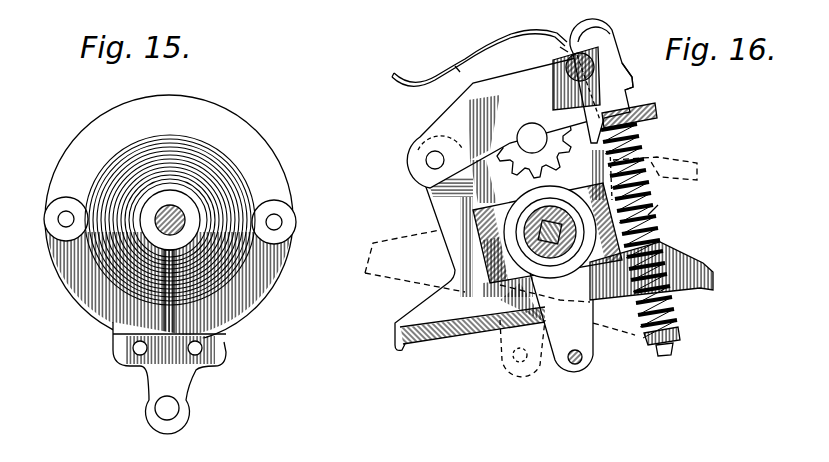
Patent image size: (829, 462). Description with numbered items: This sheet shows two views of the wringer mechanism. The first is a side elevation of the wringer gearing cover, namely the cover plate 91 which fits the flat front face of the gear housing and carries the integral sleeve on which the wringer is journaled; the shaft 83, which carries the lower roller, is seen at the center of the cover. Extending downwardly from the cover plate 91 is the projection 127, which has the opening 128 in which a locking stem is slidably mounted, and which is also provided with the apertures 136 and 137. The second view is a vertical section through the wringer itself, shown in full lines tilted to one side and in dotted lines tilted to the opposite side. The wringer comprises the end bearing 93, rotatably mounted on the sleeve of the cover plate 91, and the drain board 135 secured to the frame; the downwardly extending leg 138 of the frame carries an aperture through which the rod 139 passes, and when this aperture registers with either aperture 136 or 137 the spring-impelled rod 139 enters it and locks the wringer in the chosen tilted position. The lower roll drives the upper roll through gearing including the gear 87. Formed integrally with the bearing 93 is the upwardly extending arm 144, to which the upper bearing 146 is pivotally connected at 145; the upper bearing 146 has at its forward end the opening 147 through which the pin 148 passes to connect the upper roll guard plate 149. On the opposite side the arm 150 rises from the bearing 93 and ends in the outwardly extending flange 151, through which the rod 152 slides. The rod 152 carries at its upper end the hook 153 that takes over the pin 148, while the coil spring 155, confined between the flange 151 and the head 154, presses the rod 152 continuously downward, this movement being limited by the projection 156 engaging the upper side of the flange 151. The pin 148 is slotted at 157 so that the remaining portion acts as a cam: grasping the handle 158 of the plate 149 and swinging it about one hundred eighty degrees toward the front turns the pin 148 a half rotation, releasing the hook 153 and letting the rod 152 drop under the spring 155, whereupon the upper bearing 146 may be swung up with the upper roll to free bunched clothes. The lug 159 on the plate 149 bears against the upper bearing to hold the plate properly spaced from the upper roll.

In FIG. 15, the shaft 83 is at (156, 212).
In FIG. 16, the shaft 83 is at (550, 232).
In FIG. 15, the cover plate 91 is at (170, 219).
In FIG. 15, the projection 127 is at (196, 378).
In FIG. 15, the opening 128 is at (160, 410).
In FIG. 15, the aperture 136 is at (133, 352).
In FIG. 15, the aperture 137 is at (203, 350).
In FIG. 16, the gear 87 is at (531, 148).
In FIG. 16, the bearing 93 is at (497, 263).
In FIG. 16, the drain board 135 is at (478, 318).
In FIG. 16, the leg 138 is at (552, 362).
In FIG. 16, the rod 139 is at (580, 362).
In FIG. 16, the arm 144 is at (450, 198).
In FIG. 16, the pivot 145 is at (428, 160).
In FIG. 16, the upper bearing 146 is at (457, 120).
In FIG. 16, the opening 147 is at (565, 50).
In FIG. 16, the pin 148 is at (612, 52).
In FIG. 16, the upper roll guard plate 149 is at (485, 52).
In FIG. 16, the arm 150 is at (652, 152).
In FIG. 16, the flange 151 is at (652, 112).
In FIG. 16, the rod 152 is at (668, 250).
In FIG. 16, the hook 153 is at (596, 33).
In FIG. 16, the head 154 is at (680, 340).
In FIG. 16, the coil spring 155 is at (658, 206).
In FIG. 16, the projection 156 is at (634, 84).
In FIG. 16, the slot 157 is at (566, 70).
In FIG. 16, the handle 158 is at (392, 75).
In FIG. 16, the lug 159 is at (462, 62).